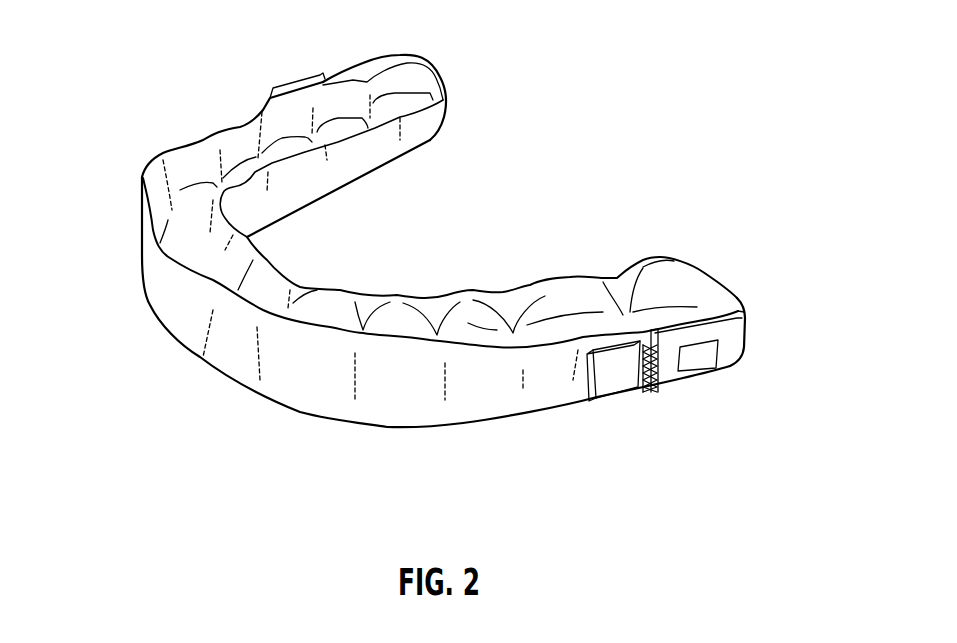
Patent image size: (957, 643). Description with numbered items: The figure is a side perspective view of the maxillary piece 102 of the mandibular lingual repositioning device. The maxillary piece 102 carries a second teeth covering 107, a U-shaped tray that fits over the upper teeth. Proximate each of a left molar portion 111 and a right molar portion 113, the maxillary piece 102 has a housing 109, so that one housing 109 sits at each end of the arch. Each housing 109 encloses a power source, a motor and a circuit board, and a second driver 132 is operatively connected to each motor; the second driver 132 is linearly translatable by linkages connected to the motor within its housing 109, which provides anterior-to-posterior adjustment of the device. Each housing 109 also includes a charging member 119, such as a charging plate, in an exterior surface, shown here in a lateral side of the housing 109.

The mouthguard / oral appliance 102 is at (641, 124).
The front portion of outer wall 107 is at (175, 240).
The end portion of tray 109 is at (408, 60).
The lingual wall 111 is at (373, 142).
The occlusal channel / lingual rim 113 is at (473, 290).
The window / opening 119 is at (698, 347).
The tab / fastener 132 is at (291, 80).